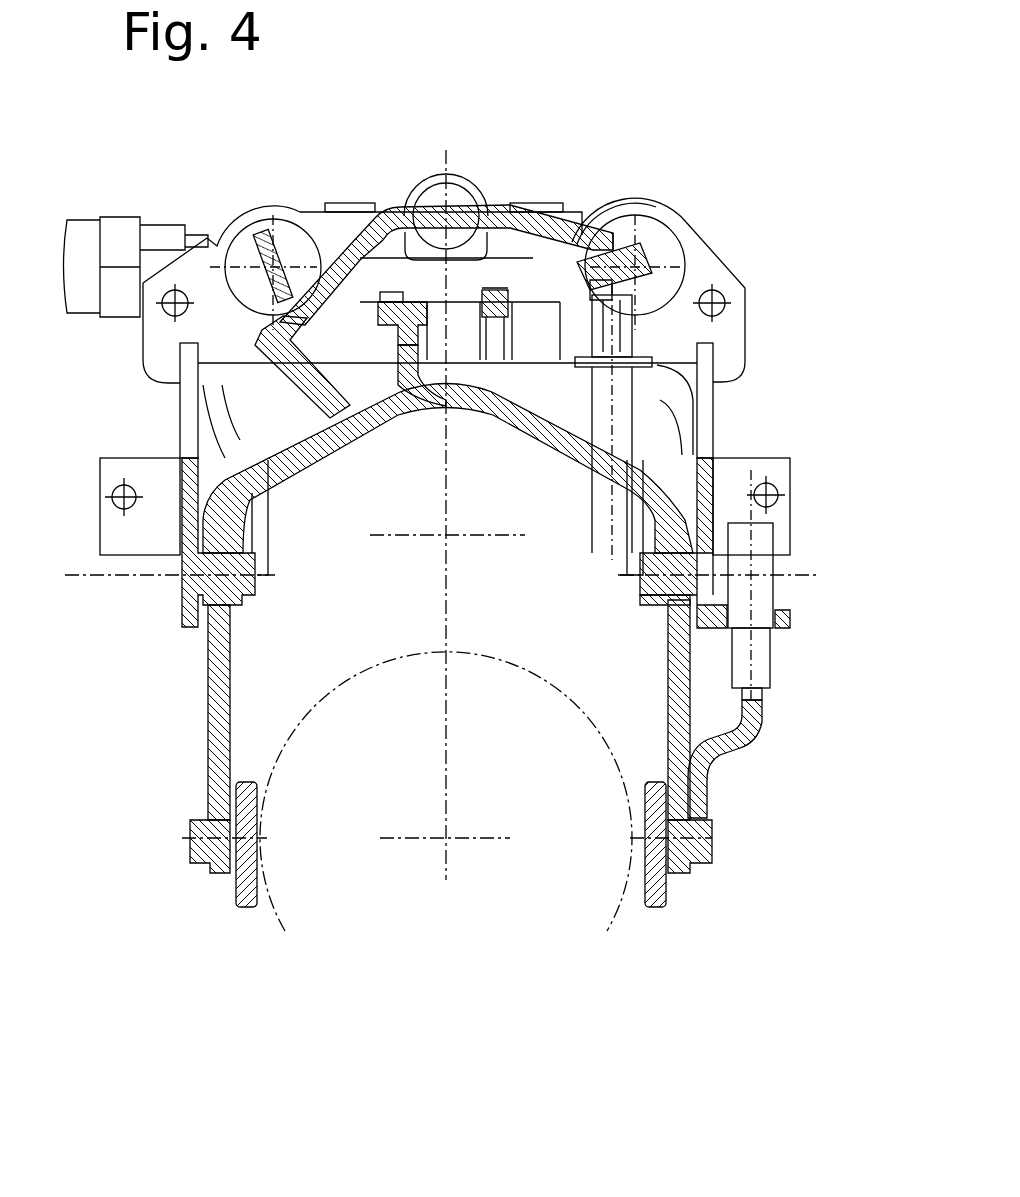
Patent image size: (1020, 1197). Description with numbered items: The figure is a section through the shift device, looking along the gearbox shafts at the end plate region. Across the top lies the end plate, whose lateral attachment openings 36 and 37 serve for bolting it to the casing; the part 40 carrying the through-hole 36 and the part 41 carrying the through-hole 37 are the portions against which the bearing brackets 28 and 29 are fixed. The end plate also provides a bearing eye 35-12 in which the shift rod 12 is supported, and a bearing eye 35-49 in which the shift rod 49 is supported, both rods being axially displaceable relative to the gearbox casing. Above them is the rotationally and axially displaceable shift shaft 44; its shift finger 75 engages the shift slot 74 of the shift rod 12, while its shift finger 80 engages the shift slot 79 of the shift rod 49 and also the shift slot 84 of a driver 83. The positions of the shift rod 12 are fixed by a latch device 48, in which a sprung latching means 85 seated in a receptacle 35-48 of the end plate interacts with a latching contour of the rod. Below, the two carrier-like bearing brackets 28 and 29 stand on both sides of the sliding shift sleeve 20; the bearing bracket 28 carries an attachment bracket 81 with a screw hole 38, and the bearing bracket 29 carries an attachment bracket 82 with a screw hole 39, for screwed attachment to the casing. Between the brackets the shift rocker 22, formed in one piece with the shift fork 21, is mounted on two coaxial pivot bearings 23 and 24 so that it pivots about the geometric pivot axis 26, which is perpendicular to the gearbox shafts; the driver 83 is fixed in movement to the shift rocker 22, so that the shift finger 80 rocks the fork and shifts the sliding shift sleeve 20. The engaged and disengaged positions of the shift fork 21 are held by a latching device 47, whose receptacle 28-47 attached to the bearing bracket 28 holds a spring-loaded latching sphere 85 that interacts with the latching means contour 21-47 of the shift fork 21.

The shift rod 12 is at (662, 268).
The sliding shift sleeve 20 is at (484, 650).
The shift fork 21 is at (681, 678).
The latching means contour 21-47 is at (760, 725).
The shift rocker 22 is at (485, 417).
The pivot bearing 23 is at (638, 600).
The pivot bearing 24 is at (252, 602).
The pivot axis 26 is at (85, 578).
The bearing bracket 28 is at (718, 397).
The receptacle 28-47 is at (758, 590).
The bearing bracket 29 is at (179, 415).
The bearing eye 35-12 is at (640, 240).
The receptacle 35-48 is at (585, 418).
The bearing eye 35-49 is at (287, 212).
The attachment opening 36 is at (716, 298).
The attachment opening 37 is at (166, 313).
The screw hole 38 is at (772, 485).
The screw hole 39 is at (108, 508).
The part of the end plate 40 is at (728, 350).
The part of the end plate 41 is at (156, 352).
The shift shaft 44 is at (465, 170).
The latching device 47 is at (797, 632).
The latch device 48 is at (582, 455).
The shift rod 49 is at (246, 250).
The shift slot 74 is at (588, 291).
The shift finger 75 is at (594, 230).
The shift slot 79 is at (266, 287).
The shift finger 80 is at (300, 307).
The attachment bracket 81 is at (771, 476).
The attachment bracket 82 is at (110, 509).
The driver 83 is at (283, 392).
The shift slot 84 is at (257, 346).
The latching sphere 85 is at (592, 300).